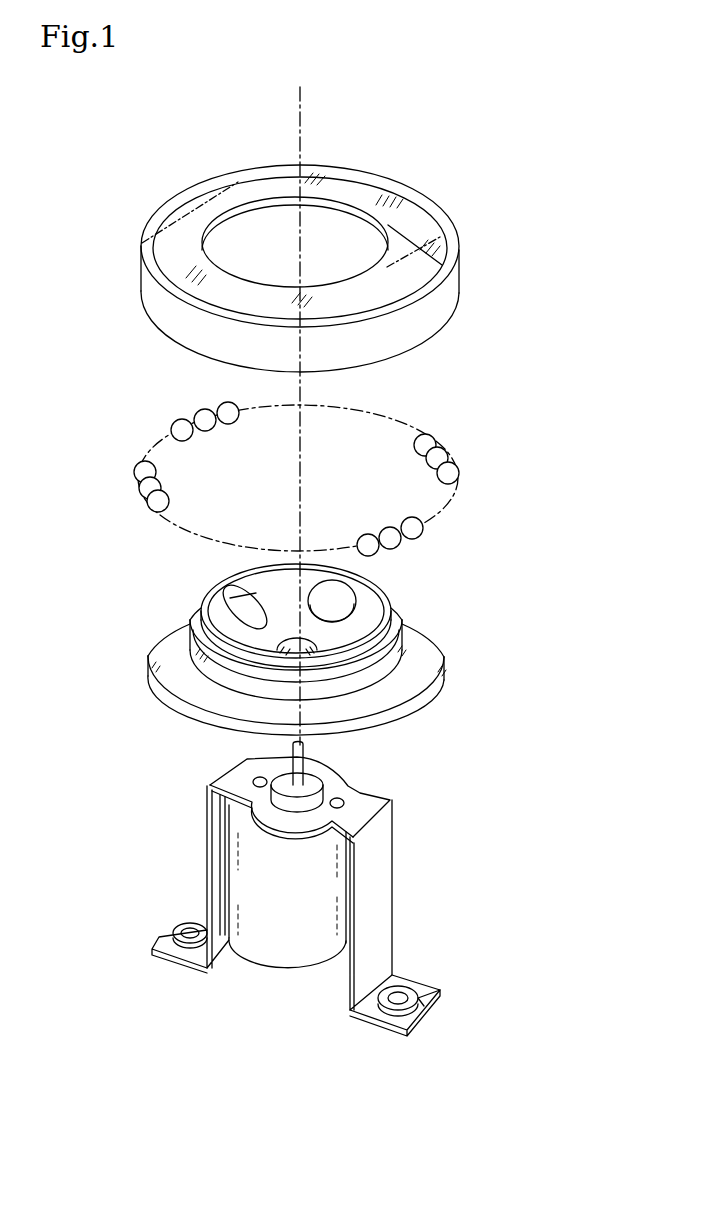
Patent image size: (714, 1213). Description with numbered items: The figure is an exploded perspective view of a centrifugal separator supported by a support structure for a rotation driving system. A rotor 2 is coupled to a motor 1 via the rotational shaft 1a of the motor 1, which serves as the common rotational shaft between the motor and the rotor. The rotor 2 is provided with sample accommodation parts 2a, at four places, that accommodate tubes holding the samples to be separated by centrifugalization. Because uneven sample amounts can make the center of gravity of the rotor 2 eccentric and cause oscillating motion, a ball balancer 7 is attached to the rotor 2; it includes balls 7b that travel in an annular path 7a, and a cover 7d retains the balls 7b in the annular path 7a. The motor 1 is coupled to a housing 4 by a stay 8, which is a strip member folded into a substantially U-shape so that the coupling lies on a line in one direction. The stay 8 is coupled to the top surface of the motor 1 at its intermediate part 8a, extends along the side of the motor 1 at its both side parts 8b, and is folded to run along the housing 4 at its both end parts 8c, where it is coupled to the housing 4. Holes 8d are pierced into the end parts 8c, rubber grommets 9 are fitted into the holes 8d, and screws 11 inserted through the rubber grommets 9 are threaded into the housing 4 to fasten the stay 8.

The motor 1 is at (295, 910).
The rotational shaft 1a is at (290, 762).
The rotor 2 is at (176, 603).
The sample accommodation parts 2a is at (224, 590).
The housing 4 is at (216, 1038).
The ball balancer 7 is at (501, 691).
The annular path 7a is at (188, 653).
The balls 7b is at (144, 470).
The cover 7d is at (160, 262).
The stay 8 is at (403, 840).
The intermediate part 8a is at (357, 803).
The side parts 8b is at (205, 868).
The end parts 8c is at (175, 965).
The holes 8d is at (165, 941).
The rubber grommets 9 is at (160, 934).
The screws 11 is at (183, 928).